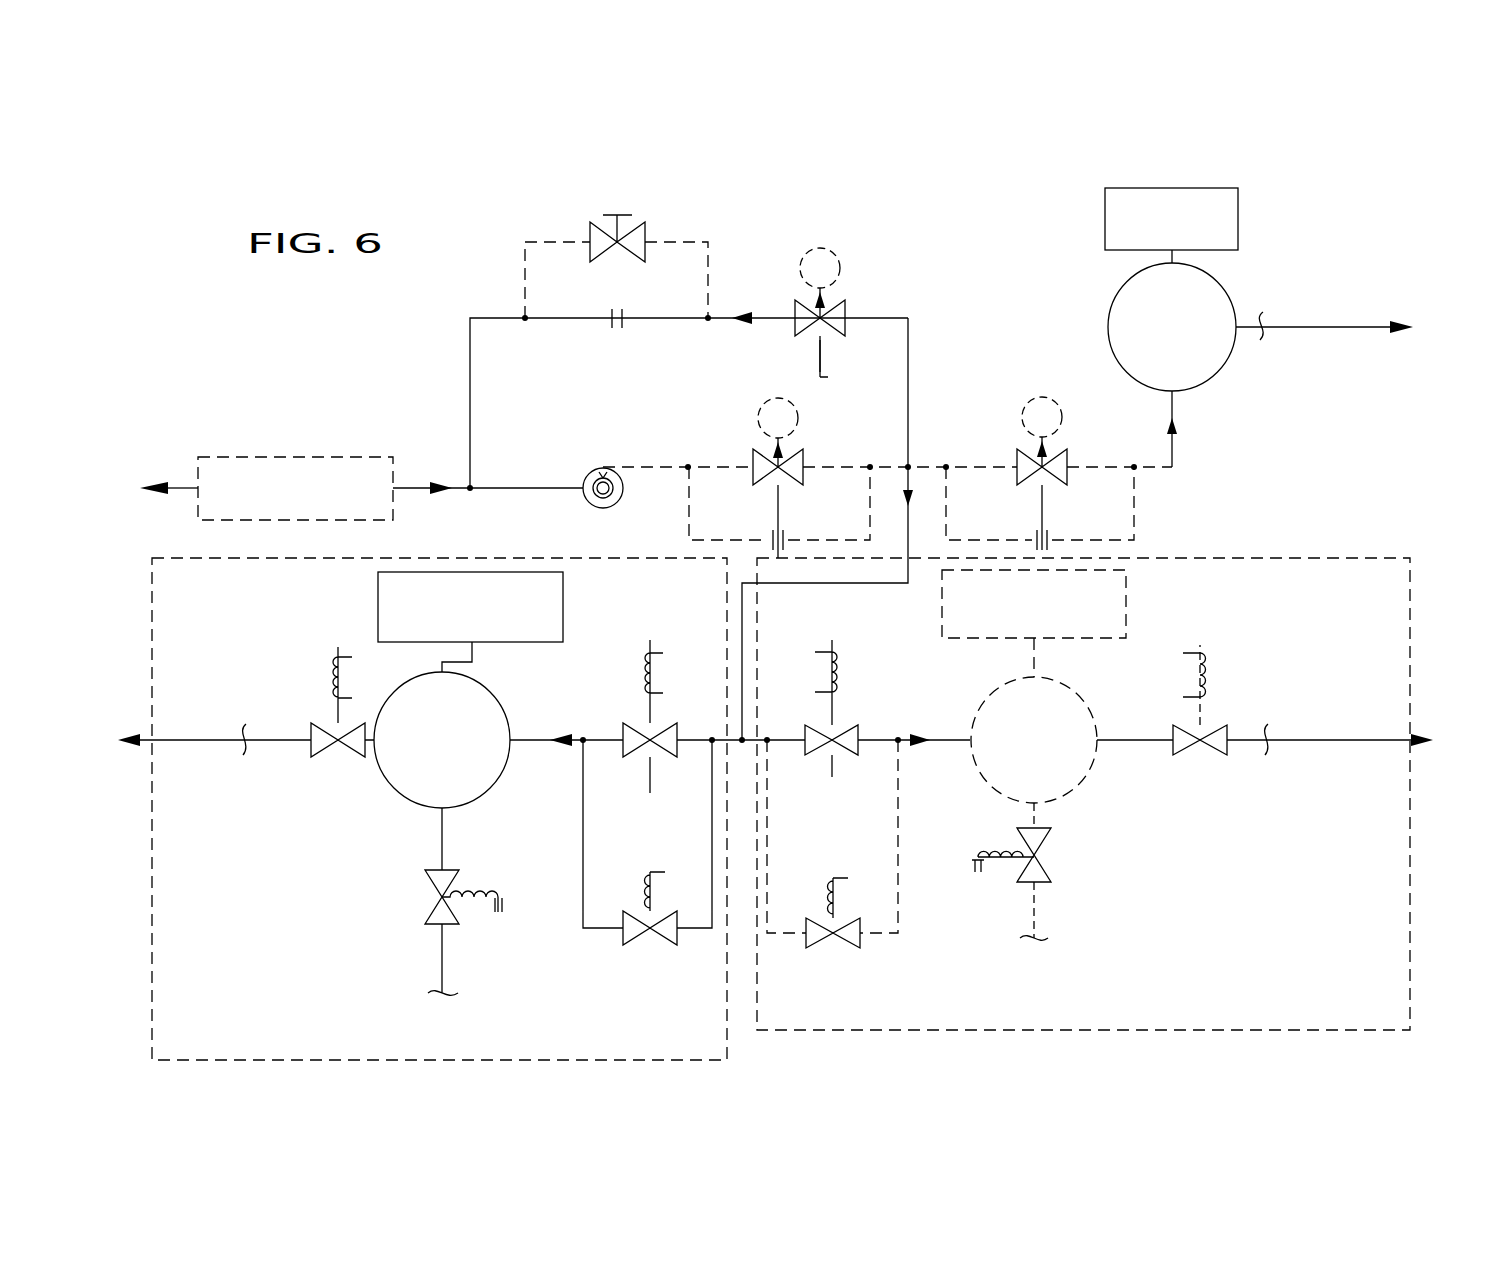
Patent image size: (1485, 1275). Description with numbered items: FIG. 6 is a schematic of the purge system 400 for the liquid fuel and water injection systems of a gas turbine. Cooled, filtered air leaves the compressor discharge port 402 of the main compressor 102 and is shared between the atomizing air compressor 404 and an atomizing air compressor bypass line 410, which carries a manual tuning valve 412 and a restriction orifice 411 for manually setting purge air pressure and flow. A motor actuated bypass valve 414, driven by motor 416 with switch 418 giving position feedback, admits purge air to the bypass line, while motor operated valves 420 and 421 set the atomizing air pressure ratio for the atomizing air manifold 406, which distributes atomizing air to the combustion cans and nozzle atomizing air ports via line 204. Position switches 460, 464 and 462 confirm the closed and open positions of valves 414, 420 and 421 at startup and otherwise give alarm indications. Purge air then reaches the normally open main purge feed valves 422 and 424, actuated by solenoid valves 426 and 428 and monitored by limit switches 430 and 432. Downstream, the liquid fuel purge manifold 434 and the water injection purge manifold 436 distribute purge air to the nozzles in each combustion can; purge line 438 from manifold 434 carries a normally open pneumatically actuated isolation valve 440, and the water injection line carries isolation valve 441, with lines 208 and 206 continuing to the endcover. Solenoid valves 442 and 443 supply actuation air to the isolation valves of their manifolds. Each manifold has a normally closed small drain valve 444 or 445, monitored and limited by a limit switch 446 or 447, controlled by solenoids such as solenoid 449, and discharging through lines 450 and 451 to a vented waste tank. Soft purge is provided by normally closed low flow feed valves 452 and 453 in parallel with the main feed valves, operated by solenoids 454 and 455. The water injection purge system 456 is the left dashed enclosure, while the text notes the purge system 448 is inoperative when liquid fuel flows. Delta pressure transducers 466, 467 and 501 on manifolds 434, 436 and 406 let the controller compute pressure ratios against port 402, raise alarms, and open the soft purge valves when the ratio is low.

The main compressor 102 is at (178, 488).
The atomizing air line 204 is at (1347, 316).
The water injection line to endcover 206 is at (209, 709).
The liquid fuel line to endcover 208 is at (1351, 731).
The purge system 400 is at (1050, 1031).
The compressor discharge port 402 is at (265, 457).
The atomizing air compressor 404 is at (588, 478).
The atomizing air manifold 406 is at (1122, 290).
The atomizing air compressor bypass line 410 is at (492, 322).
The restriction orifice 411 is at (616, 329).
The manual tuning valve 412 is at (592, 247).
The motor actuated bypass valve 414 is at (848, 305).
The motor 416 is at (836, 256).
The switch 418 is at (829, 378).
The atomizing air valve 420 is at (805, 463).
The pressure ratio control valve 421 is at (1070, 458).
The main purge feed valve 422 is at (858, 732).
The main purge feed valve 424 is at (622, 736).
The solenoid valve 426 is at (840, 657).
The solenoid valve 428 is at (643, 668).
The limit switch 430 is at (835, 760).
The limit switch 432 is at (646, 758).
The liquid fuel purge manifold 434 is at (1076, 787).
The water injection purge manifold 436 is at (492, 700).
The purge line 438 is at (1120, 738).
The isolation valve 440 is at (1226, 752).
The isolation valve 441 is at (313, 752).
The solenoid valve 442 is at (1210, 668).
The solenoid valve 443 is at (331, 664).
The drain valve 444 is at (1052, 880).
The drain valve 445 is at (425, 910).
The limit switch 446 is at (974, 877).
The limit switch 447 is at (506, 924).
The purge system 448 is at (1428, 905).
The solenoid 449 is at (494, 890).
The discharge line 450 is at (1063, 985).
The discharge line 451 is at (380, 1028).
The soft purge feed valve 452 is at (861, 945).
The soft purge feed valve 453 is at (678, 942).
The solenoid 454 is at (828, 905).
The solenoid 455 is at (645, 898).
The water injection purge system 456 is at (152, 792).
The position switch 460 is at (815, 355).
The position switch 462 is at (1037, 498).
The position switch 464 is at (773, 497).
The delta pressure transducer 466 is at (1128, 592).
The delta pressure transducer 467 is at (378, 590).
The delta pressure transducer 501 is at (1240, 216).